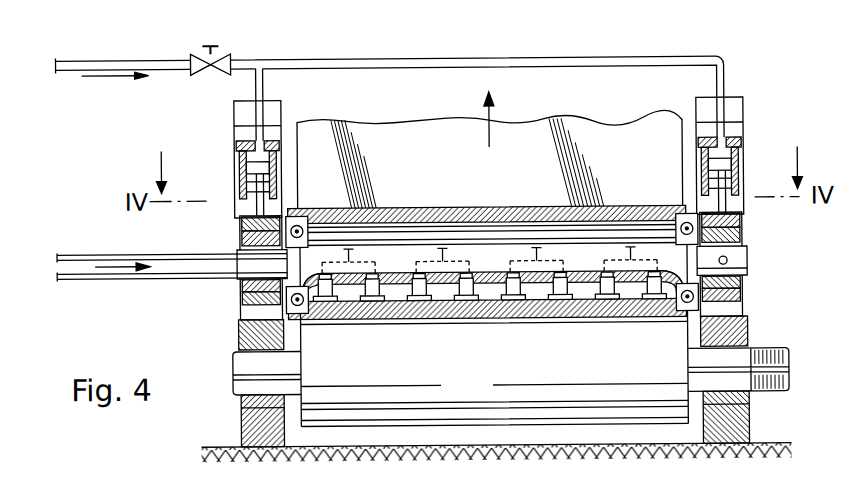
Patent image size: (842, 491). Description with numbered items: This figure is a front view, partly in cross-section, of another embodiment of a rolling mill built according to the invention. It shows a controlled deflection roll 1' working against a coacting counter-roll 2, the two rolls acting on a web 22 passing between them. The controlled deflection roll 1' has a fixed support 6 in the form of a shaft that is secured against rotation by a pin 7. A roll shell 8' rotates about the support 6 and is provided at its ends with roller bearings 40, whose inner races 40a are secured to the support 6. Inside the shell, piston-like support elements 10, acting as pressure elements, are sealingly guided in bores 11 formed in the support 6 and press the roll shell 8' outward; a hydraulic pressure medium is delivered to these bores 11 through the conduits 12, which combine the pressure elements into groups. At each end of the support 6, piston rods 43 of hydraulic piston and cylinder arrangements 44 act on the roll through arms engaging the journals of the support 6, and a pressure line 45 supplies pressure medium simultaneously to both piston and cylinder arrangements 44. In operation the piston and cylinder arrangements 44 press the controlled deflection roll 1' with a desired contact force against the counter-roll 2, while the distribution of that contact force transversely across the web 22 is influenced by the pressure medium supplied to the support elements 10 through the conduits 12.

The controlled deflection roll 1' is at (515, 170).
The counter-roll 2 is at (489, 379).
The support 6 is at (400, 247).
The pin 7 is at (728, 262).
The roll shell 8' is at (486, 198).
The support elements 10 is at (412, 322).
The bores 11 is at (569, 264).
The conduits 12 is at (197, 253).
The web 22 is at (591, 120).
The roller bearings 40 is at (302, 216).
The inner races 40a is at (304, 298).
The piston rods 43 is at (257, 211).
The piston and cylinder arrangements 44 is at (236, 152).
The pressure line 45 is at (646, 67).